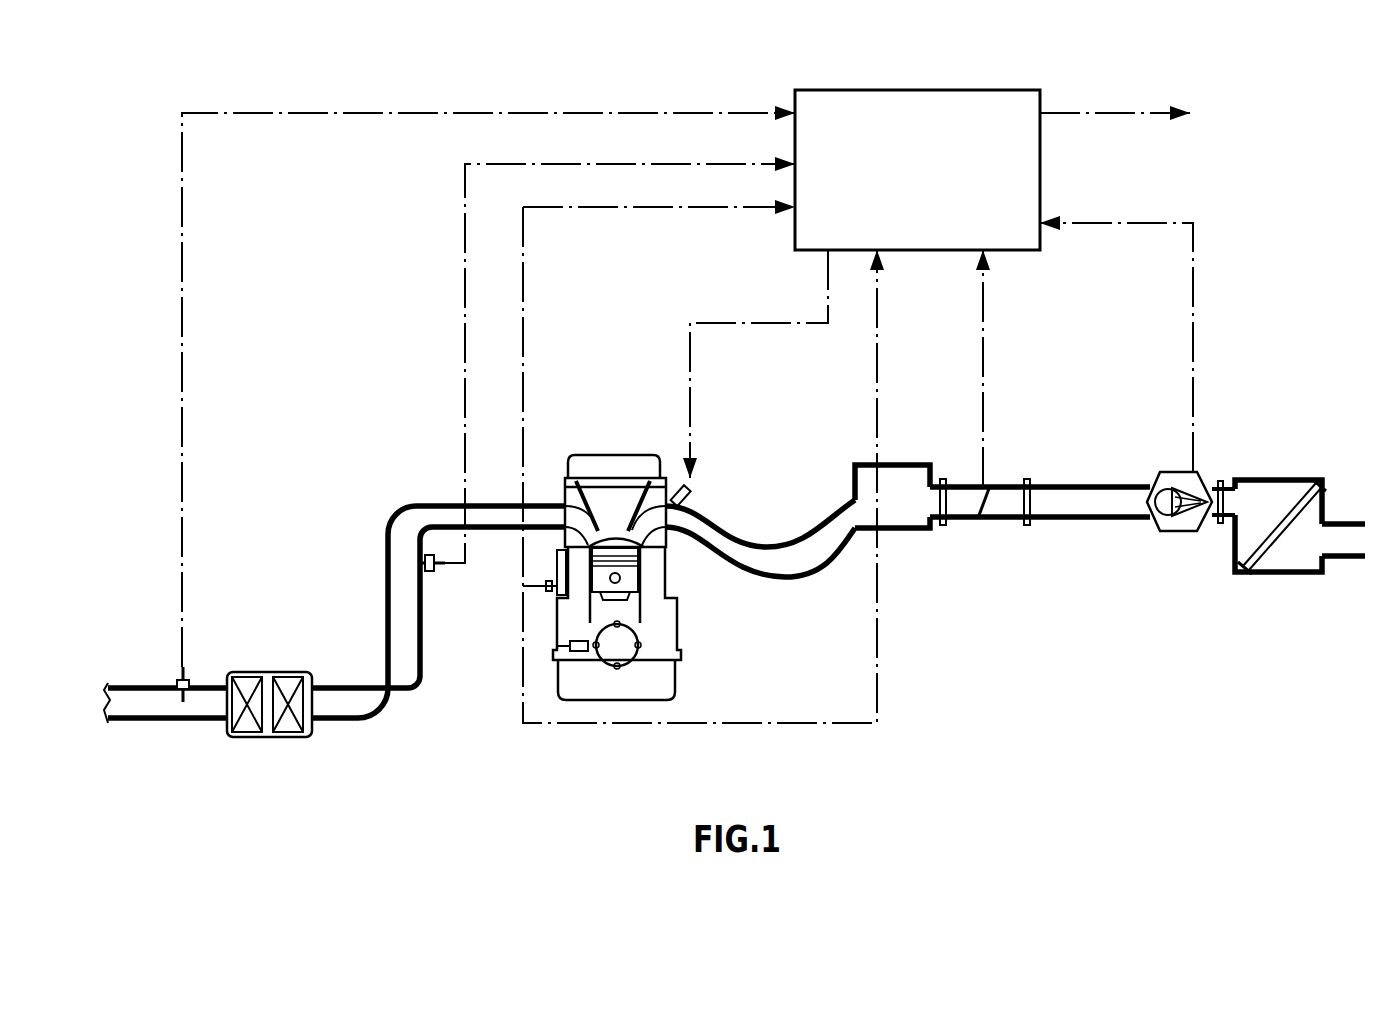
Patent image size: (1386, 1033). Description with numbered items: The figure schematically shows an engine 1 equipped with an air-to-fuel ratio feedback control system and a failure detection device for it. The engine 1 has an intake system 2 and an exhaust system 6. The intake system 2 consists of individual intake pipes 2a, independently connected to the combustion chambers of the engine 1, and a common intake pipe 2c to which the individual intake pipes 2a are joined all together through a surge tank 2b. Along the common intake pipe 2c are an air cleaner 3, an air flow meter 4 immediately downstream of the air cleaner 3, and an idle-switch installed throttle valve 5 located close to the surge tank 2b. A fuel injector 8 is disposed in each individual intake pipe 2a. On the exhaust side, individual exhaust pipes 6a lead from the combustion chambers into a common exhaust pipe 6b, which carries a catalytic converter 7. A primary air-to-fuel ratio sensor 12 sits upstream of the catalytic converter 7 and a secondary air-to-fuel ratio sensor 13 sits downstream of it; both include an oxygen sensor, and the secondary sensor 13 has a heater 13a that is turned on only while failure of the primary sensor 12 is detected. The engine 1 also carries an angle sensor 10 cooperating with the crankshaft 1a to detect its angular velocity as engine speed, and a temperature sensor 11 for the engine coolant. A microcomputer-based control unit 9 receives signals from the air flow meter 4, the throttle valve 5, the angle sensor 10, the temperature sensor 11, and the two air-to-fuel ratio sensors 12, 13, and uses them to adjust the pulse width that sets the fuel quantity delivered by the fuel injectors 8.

The engine 1 is at (690, 610).
The crankshaft 1a is at (622, 652).
The intake system 2 is at (908, 511).
The individual intake pipes 2a is at (762, 545).
The surge tank 2b is at (905, 476).
The common intake pipe 2c is at (1085, 498).
The air cleaner 3 is at (1283, 477).
The air flow meter 4 is at (1170, 473).
The idle-switch installed throttle valve 5 is at (985, 520).
The exhaust system 6 is at (337, 613).
The individual exhaust pipes 6a is at (546, 500).
The common exhaust pipe 6b is at (386, 598).
The catalytic converter 7 is at (253, 673).
The fuel injector 8 is at (683, 490).
The control unit 9 is at (968, 90).
The angle sensor 10 is at (570, 646).
The temperature sensor 11 is at (548, 588).
The primary air-to-fuel ratio sensor 12 is at (440, 556).
The secondary air-to-fuel ratio sensor 13 is at (188, 675).
The heater 13a is at (180, 684).